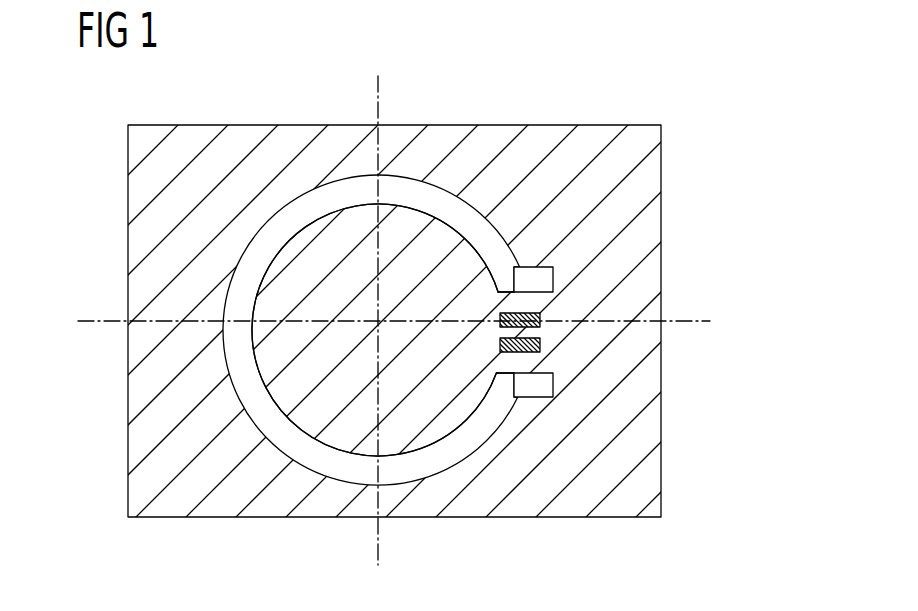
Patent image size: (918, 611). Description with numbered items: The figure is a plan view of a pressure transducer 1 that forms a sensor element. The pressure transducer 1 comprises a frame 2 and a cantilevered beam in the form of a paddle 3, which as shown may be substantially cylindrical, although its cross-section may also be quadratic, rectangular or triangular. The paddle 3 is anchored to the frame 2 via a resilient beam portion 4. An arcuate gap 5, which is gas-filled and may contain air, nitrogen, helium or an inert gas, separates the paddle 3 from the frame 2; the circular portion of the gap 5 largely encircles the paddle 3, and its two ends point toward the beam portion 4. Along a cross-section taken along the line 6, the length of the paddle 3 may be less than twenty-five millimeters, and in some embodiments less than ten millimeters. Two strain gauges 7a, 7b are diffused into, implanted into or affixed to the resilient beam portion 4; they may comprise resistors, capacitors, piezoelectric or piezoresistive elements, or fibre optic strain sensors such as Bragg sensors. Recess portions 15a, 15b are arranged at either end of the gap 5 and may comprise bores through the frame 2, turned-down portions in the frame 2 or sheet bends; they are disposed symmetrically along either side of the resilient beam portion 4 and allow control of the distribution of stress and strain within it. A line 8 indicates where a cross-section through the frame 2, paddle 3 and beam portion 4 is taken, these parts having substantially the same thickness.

The pressure transducer 1 is at (695, 150).
The frame 2 is at (543, 148).
The paddle 3 is at (345, 285).
The beam portion 4 is at (518, 305).
The arcuate gap 5 is at (287, 227).
The line 6 is at (380, 90).
The strain gauge 7a is at (540, 316).
The strain gauge 7b is at (540, 343).
The line 8 is at (100, 318).
The recess portion 15a is at (540, 279).
The recess portion 15b is at (540, 385).